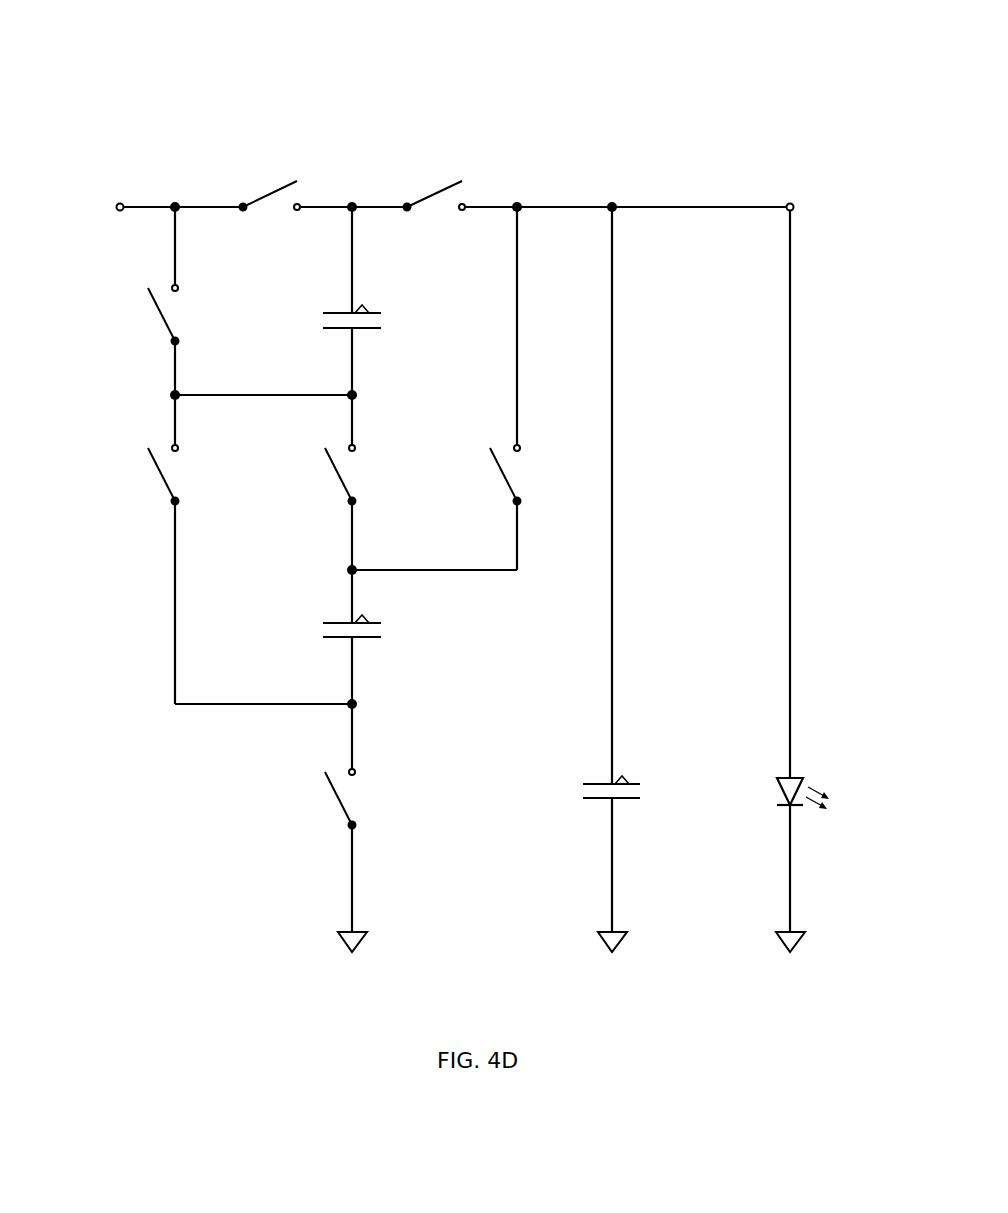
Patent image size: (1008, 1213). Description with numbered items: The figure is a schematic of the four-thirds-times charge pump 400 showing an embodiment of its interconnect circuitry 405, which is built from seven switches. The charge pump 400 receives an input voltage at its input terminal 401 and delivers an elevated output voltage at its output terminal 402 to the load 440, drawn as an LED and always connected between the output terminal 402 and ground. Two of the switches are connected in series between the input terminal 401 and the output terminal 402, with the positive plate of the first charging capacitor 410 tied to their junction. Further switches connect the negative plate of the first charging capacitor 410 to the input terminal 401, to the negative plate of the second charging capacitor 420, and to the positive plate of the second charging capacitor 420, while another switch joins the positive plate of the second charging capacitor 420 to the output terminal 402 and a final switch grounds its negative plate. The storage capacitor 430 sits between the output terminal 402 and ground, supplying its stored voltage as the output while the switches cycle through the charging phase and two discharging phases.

The charge pump 400 is at (90, 55).
The input terminal 401 is at (120, 200).
The output terminal 402 is at (790, 202).
The interconnect circuitry 405 is at (655, 204).
The charging capacitor 410 is at (322, 318).
The charging capacitor 420 is at (322, 628).
The storage (output) capacitor 430 is at (582, 789).
The load 440 is at (775, 793).